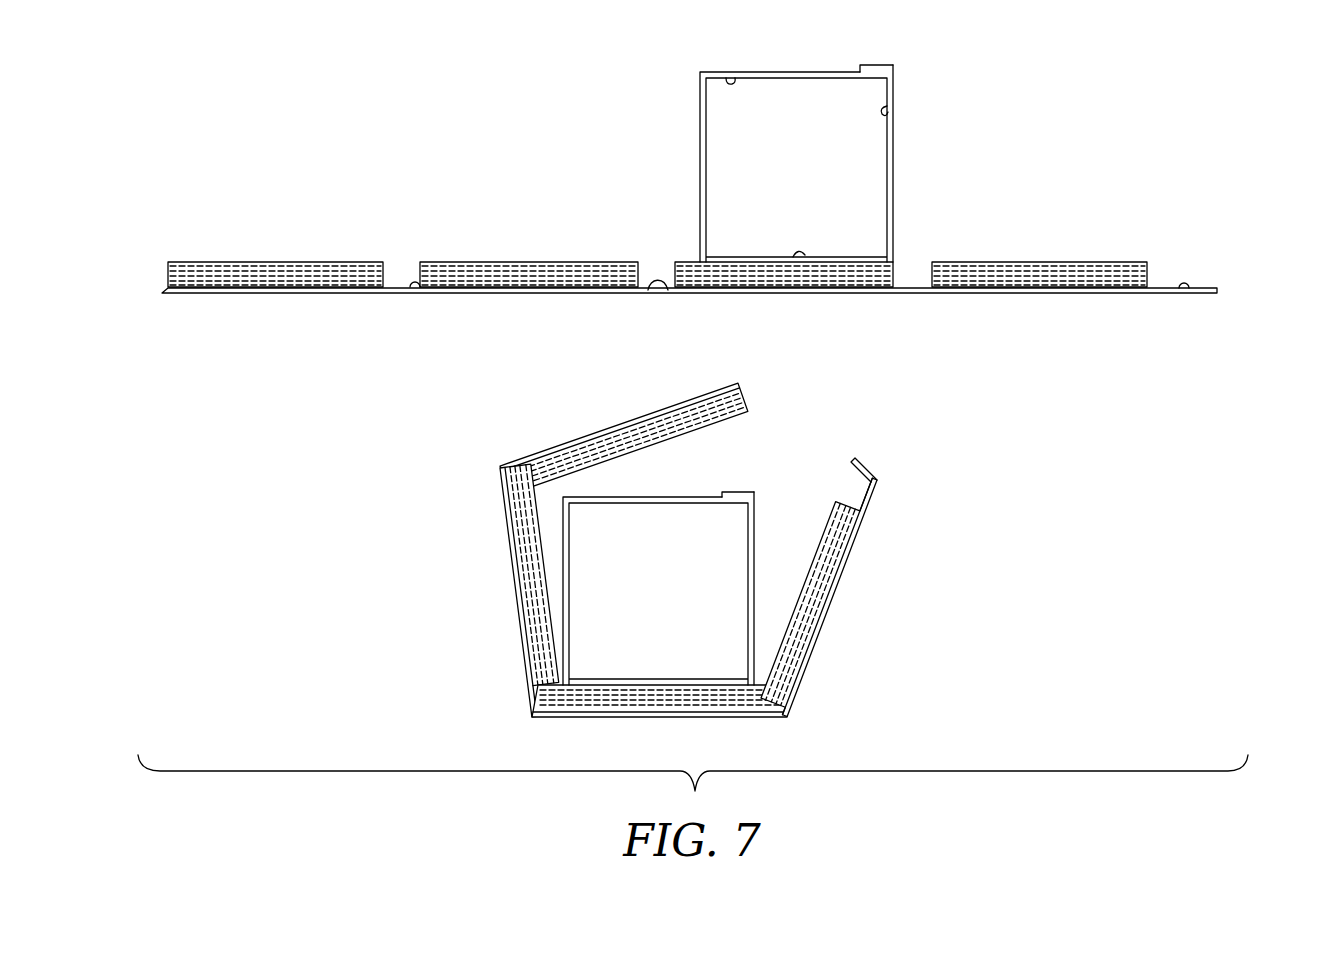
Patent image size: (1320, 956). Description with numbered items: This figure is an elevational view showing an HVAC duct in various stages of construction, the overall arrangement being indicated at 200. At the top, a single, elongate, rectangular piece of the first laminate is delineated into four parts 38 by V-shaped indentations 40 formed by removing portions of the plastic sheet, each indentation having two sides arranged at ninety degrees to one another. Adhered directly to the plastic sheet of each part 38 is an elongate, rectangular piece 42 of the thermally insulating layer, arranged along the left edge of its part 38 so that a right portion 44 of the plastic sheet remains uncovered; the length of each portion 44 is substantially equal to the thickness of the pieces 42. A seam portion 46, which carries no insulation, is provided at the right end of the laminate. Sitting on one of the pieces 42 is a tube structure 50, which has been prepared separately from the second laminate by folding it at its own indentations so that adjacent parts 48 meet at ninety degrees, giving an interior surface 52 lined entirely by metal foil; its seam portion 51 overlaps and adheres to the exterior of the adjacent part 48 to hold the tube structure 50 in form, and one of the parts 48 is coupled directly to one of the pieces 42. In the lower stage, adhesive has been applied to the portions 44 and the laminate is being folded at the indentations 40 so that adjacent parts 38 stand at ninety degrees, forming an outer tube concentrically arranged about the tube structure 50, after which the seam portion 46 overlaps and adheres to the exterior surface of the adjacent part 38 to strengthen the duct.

The cushion assembly 200 is at (717, 445).
The part 38 is at (717, 480).
The V-shaped indentation 40 is at (408, 300).
The rectangular piece of thermally insulating layer 42 is at (277, 262).
The right portion of plastic sheet 44 is at (398, 282).
The seam portion 46 is at (1205, 296).
The part 48 is at (790, 73).
The tube structure 50 is at (758, 351).
The seam portion 51 is at (877, 66).
The interior surface 52 is at (728, 78).